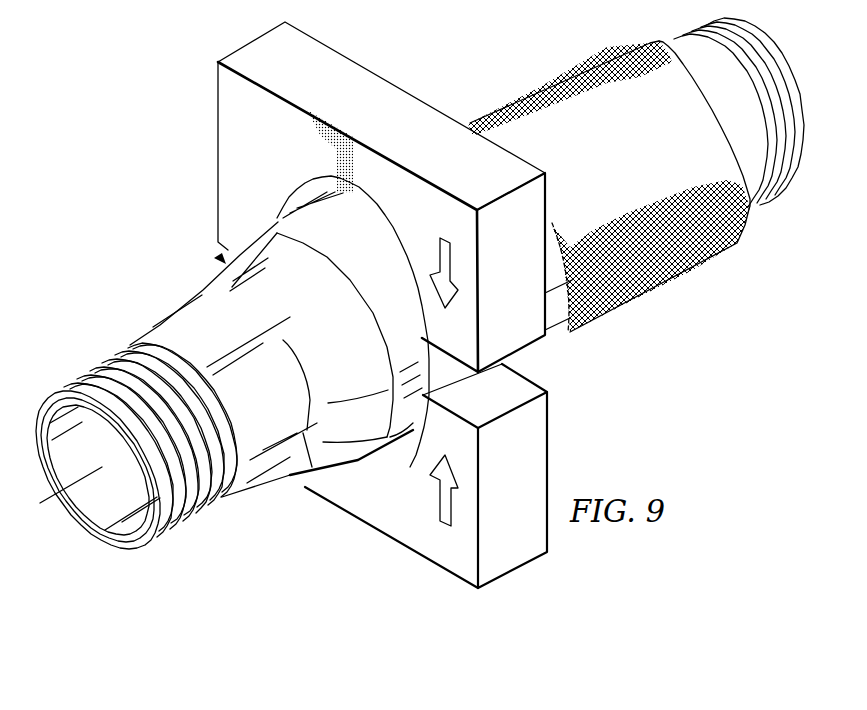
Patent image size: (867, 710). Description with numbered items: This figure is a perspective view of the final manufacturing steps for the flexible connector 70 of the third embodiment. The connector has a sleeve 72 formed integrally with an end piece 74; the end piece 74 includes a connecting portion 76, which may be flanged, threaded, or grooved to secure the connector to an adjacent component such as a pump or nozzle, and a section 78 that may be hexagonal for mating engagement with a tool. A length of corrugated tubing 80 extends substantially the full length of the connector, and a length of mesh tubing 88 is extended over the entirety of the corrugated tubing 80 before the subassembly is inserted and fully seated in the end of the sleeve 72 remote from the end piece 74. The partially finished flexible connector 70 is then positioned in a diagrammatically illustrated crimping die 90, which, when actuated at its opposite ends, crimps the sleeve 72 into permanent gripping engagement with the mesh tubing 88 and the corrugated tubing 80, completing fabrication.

The flexible connector 70 is at (425, 303).
The sleeve 72 is at (366, 243).
The end piece 74 is at (134, 336).
The connecting portion 76 is at (166, 538).
The section 78 is at (266, 492).
The corrugated tubing 80 is at (771, 200).
The mesh tubing 88 is at (525, 82).
The crimping die 90 is at (211, 97).